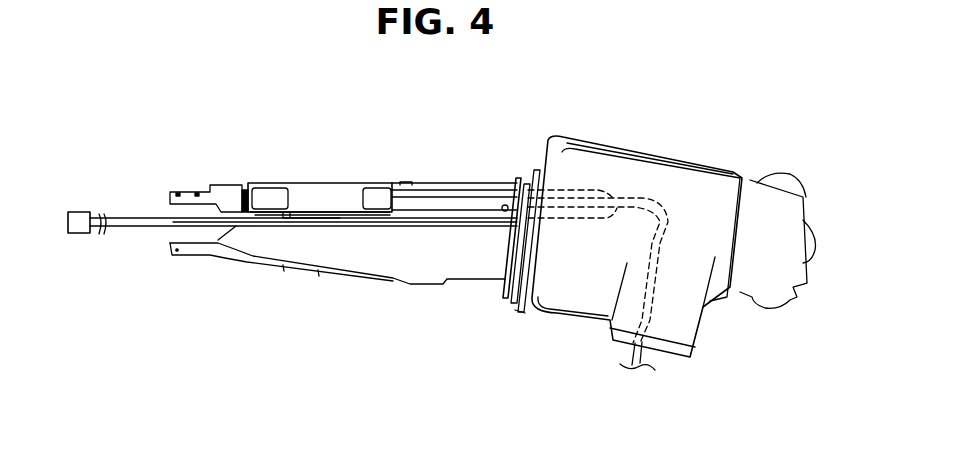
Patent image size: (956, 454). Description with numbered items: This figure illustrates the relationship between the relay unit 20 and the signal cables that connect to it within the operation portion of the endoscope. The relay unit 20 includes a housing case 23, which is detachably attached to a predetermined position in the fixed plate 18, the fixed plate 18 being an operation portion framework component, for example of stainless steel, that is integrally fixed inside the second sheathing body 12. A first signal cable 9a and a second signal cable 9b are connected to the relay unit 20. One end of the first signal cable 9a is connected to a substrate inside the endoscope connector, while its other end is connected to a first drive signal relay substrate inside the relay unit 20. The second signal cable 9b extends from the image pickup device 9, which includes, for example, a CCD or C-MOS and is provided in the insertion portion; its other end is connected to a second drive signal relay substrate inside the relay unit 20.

The image pickup device 9 is at (79, 212).
The first signal cable 9a is at (647, 358).
The second signal cable 9b is at (173, 223).
The second sheathing body 12 is at (728, 200).
The fixed plate 18 is at (418, 258).
The relay unit 20 is at (310, 178).
The housing case 23 is at (347, 178).